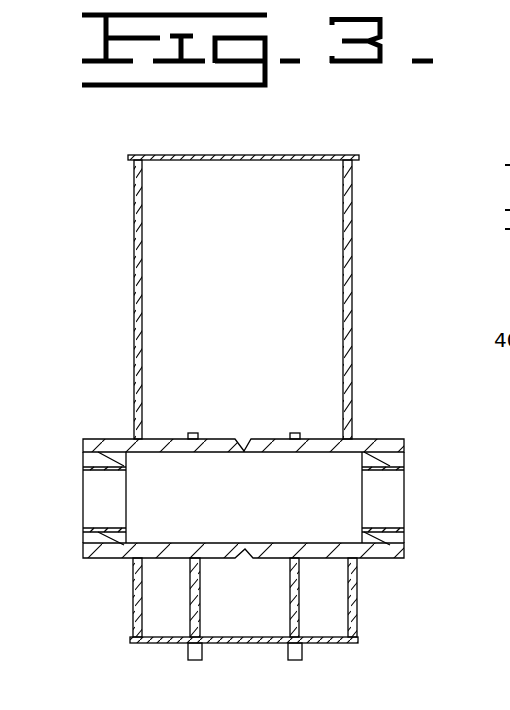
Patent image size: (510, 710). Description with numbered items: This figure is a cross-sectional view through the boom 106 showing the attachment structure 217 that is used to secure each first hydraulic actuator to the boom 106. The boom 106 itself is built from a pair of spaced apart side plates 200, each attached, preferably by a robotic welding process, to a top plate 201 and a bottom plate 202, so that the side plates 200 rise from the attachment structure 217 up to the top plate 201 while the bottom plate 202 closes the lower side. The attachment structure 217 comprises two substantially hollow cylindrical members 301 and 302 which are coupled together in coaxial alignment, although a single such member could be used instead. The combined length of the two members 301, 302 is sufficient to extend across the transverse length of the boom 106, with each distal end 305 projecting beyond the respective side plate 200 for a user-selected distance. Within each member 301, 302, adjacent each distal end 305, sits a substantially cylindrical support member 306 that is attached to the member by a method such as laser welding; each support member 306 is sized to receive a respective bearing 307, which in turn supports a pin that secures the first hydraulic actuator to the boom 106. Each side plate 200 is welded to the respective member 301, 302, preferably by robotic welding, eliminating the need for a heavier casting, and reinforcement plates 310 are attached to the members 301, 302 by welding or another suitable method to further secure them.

The boom 106 is at (368, 239).
The top plate 201 is at (192, 155).
The side plate 200 is at (134, 307).
The attachment structure 217 is at (104, 428).
The hollow cylindrical member 301 is at (225, 439).
The hollow cylindrical member 302 is at (252, 439).
The support member 306 is at (90, 462).
The bearing 307 is at (88, 470).
The distal end 305 is at (103, 558).
The reinforcement plate 310 is at (290, 615).
The bottom plate 202 is at (322, 643).